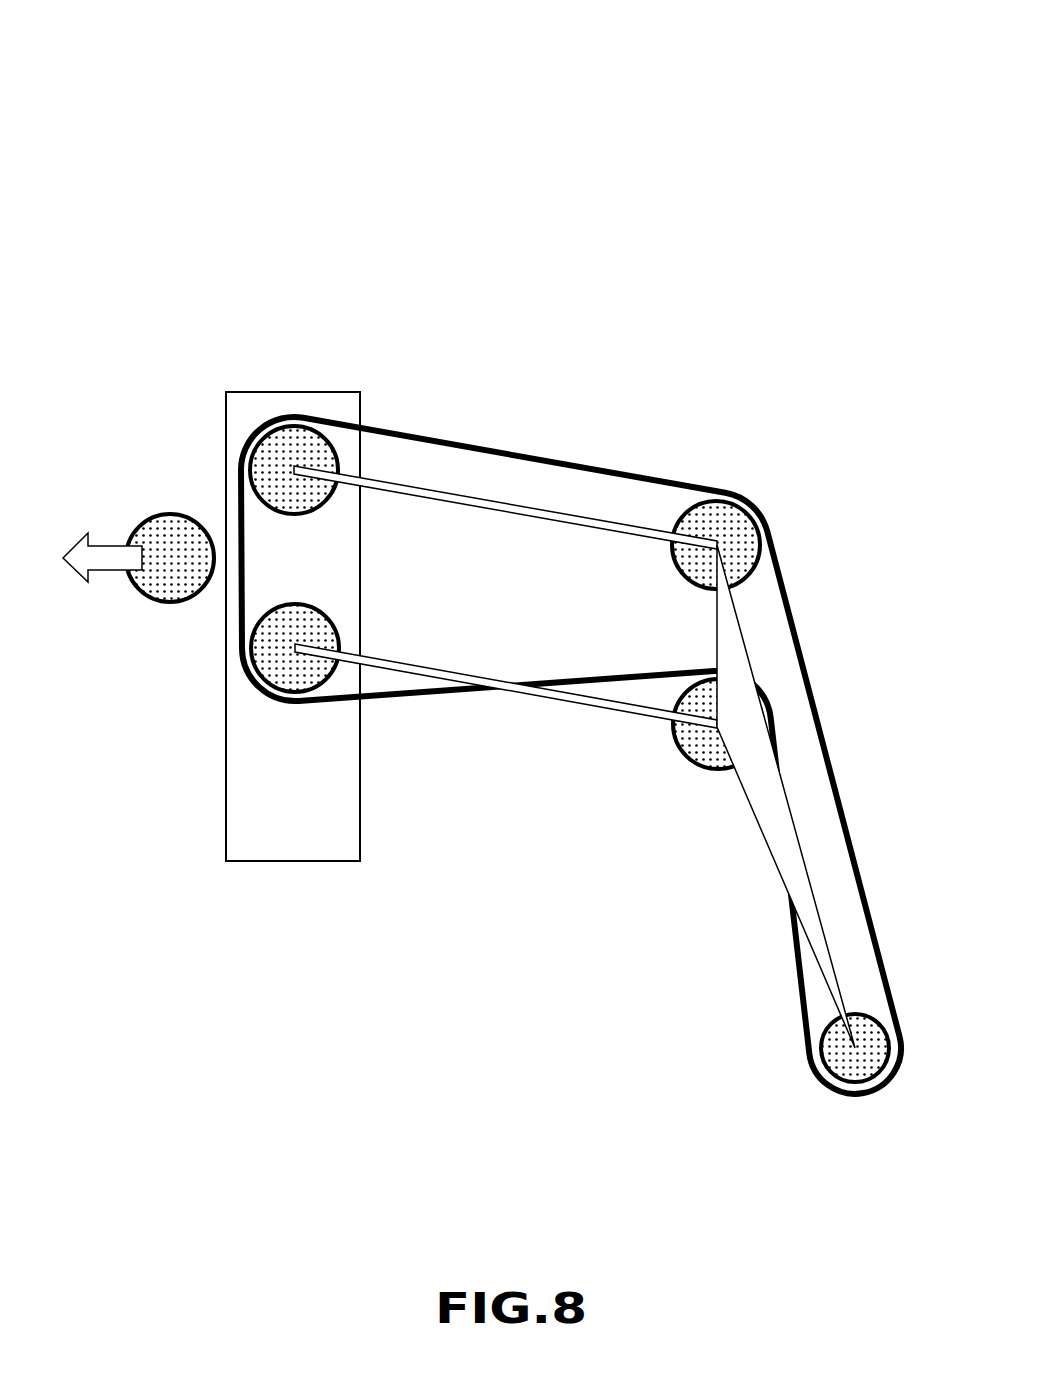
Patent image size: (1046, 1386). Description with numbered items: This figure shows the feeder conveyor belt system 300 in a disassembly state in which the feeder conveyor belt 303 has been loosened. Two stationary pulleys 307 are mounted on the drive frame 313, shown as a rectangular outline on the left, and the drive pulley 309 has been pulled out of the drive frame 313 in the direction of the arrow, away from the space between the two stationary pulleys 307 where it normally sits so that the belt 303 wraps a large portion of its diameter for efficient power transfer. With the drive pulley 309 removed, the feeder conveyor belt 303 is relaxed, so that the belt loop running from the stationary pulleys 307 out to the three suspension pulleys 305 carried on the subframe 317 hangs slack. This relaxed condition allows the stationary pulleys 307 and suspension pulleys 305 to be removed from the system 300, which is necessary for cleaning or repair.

The feeder conveyor belt system 300 is at (547, 52).
The feeder conveyor belt 303 is at (553, 455).
The suspension pulleys 305 is at (733, 505).
The stationary pulleys 307 is at (268, 468).
The drive pulley 309 is at (148, 525).
The drive frame 313 is at (293, 392).
The subframe 317 is at (768, 810).